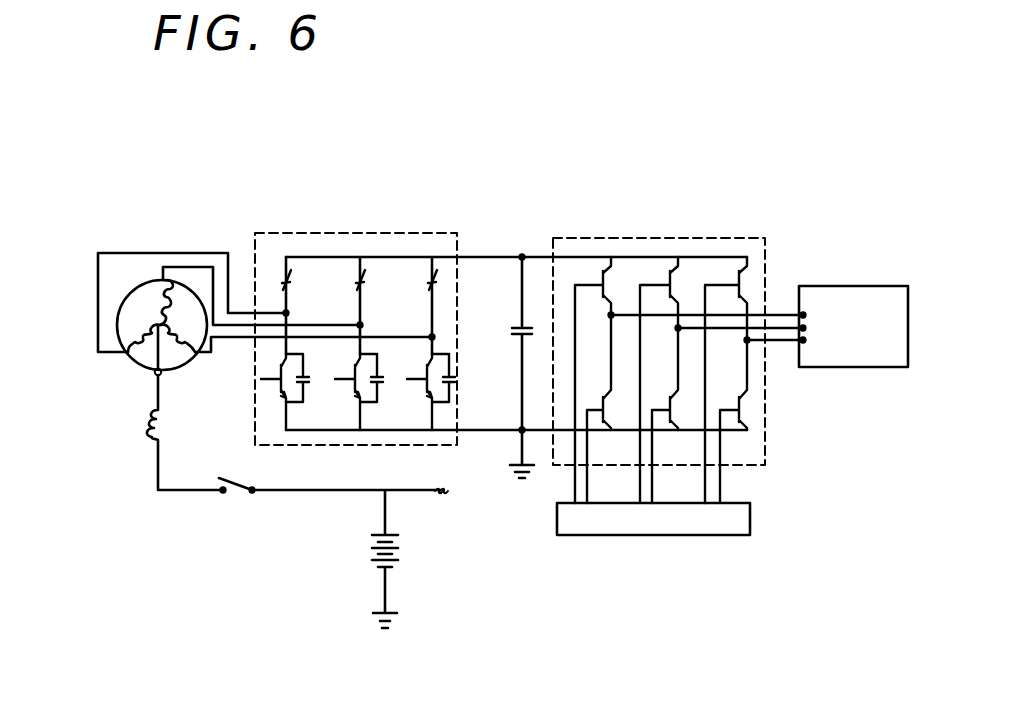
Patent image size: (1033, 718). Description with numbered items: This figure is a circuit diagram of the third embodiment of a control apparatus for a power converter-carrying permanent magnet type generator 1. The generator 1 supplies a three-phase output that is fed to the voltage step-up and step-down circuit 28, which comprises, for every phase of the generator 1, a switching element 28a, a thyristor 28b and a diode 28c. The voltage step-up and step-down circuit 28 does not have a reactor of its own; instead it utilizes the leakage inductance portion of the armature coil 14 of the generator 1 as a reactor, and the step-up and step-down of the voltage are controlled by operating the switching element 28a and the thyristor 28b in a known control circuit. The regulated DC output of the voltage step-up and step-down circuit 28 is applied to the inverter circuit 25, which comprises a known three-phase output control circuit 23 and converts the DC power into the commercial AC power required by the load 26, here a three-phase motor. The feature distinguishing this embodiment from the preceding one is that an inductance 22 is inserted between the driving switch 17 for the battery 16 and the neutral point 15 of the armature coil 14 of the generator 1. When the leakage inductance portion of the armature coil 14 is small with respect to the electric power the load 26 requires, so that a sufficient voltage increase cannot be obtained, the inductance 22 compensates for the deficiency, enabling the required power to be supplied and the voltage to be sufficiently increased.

The permanent magnet type generator 1 is at (147, 298).
The armature coil 14 is at (137, 338).
The neutral point 15 is at (155, 375).
The battery 16 is at (367, 557).
The driving switch 17 is at (236, 492).
The inductance 22 is at (147, 438).
The three-phase output control circuit 23 is at (677, 525).
The inverter circuit 25 is at (727, 248).
The load 26 is at (868, 313).
The voltage step-up and step-down circuit 28 is at (388, 302).
The switching element 28a is at (437, 374).
The thyristor 28b is at (440, 284).
The diode 28c is at (450, 393).